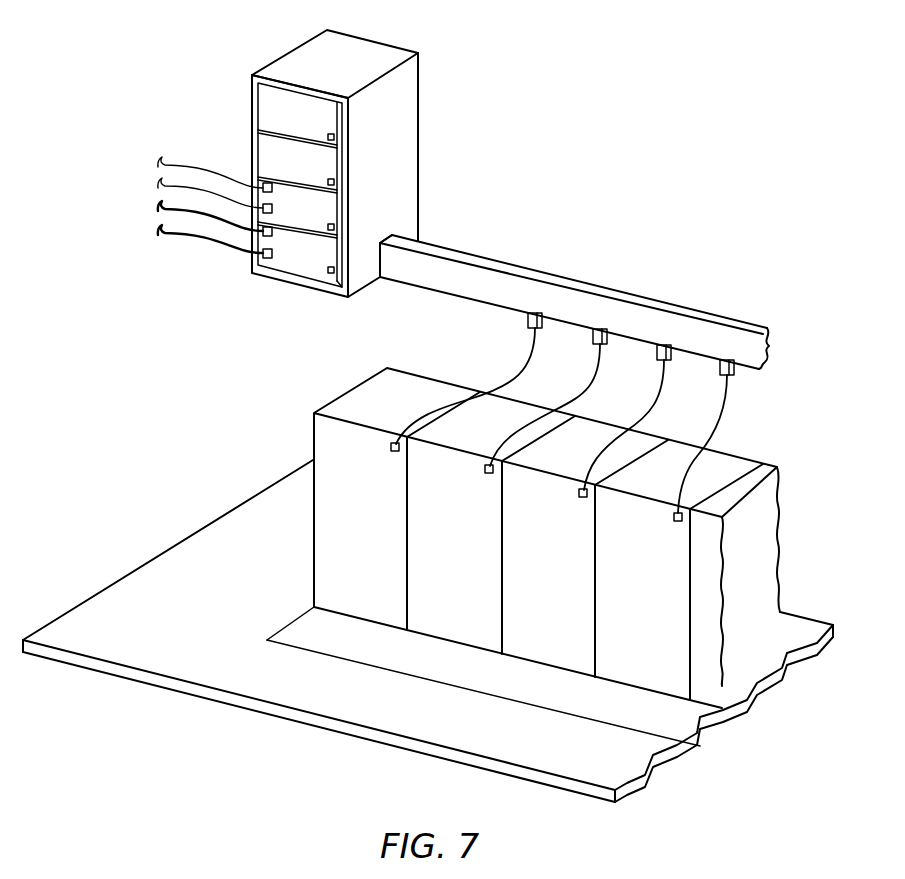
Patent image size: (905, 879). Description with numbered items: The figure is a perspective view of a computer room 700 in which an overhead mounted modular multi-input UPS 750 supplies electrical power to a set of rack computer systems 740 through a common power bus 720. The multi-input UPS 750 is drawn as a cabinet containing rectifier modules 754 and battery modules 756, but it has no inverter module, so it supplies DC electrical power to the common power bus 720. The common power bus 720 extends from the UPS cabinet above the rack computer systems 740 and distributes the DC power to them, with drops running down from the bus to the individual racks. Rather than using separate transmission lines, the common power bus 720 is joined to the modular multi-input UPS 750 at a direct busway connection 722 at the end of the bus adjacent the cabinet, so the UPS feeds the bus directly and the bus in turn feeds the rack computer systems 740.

The computer room 700 is at (678, 197).
The common power bus 720 is at (576, 352).
The direct busway connection 722 is at (383, 234).
The rack computer systems 740 is at (410, 678).
The multi-input UPS 750 is at (288, 154).
The rectifier modules 754 is at (305, 208).
The battery modules 756 is at (303, 123).